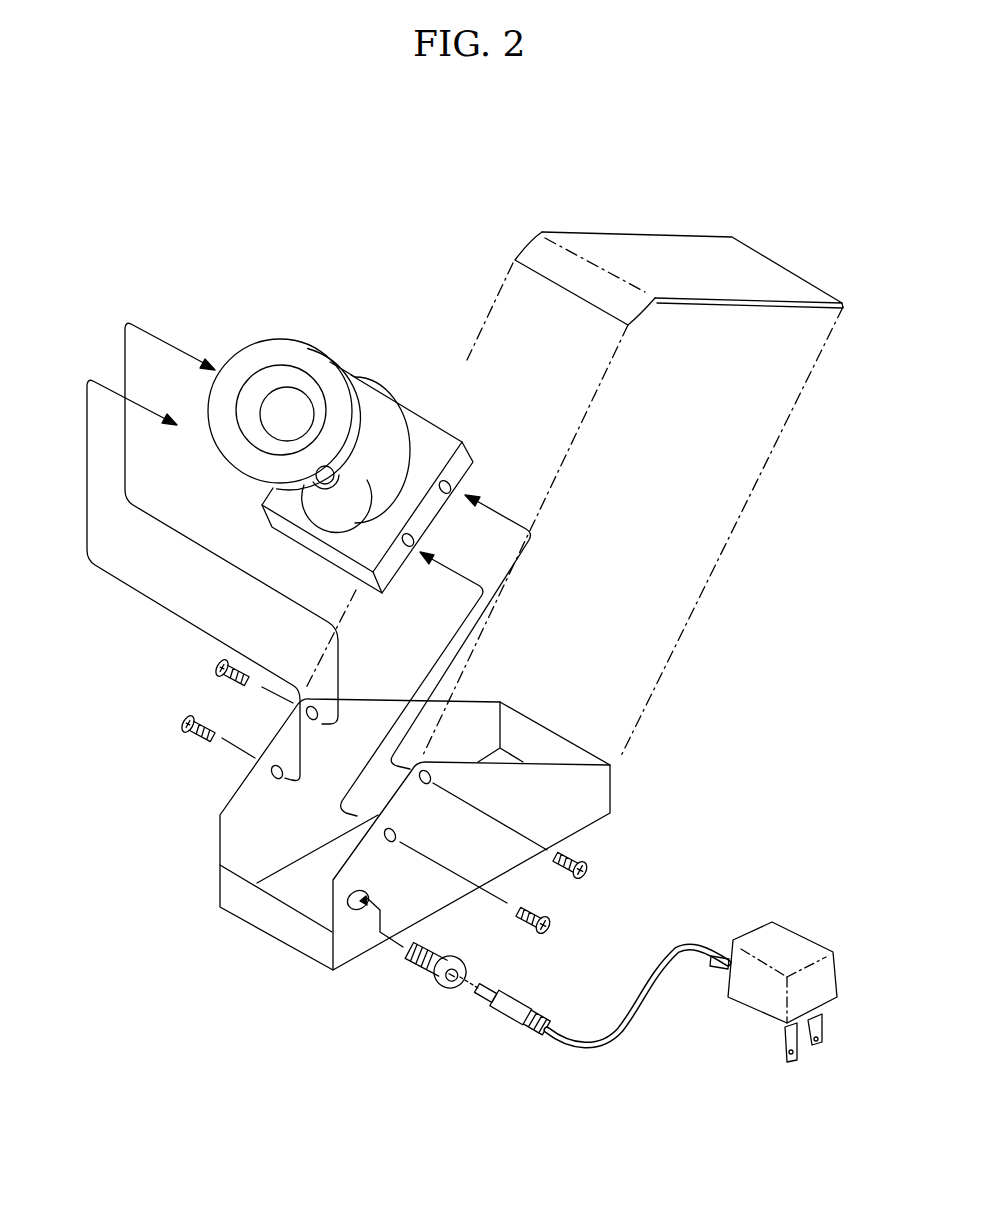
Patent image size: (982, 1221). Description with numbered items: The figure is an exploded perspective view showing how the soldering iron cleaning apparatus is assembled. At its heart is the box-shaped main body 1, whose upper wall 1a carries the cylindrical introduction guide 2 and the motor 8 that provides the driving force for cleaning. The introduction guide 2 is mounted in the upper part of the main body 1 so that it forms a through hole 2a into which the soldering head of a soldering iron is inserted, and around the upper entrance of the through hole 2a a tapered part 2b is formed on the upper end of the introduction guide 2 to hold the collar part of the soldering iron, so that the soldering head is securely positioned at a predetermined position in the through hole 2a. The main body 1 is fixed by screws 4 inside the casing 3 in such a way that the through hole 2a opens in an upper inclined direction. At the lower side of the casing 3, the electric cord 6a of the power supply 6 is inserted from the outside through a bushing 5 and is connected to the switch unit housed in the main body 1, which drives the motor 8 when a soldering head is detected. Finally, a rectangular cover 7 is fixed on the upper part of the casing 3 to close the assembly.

The main body 1 is at (428, 414).
The upper wall 1a is at (395, 408).
The introduction guide 2 is at (339, 352).
The through hole 2a is at (292, 412).
The tapered part 2b is at (262, 383).
The casing 3 is at (602, 805).
The screws 4 is at (213, 665).
The bushing 5 is at (437, 990).
The power supply 6 is at (758, 924).
The electric cord 6a is at (590, 1042).
The cover 7 is at (633, 232).
The motor 8 is at (351, 505).